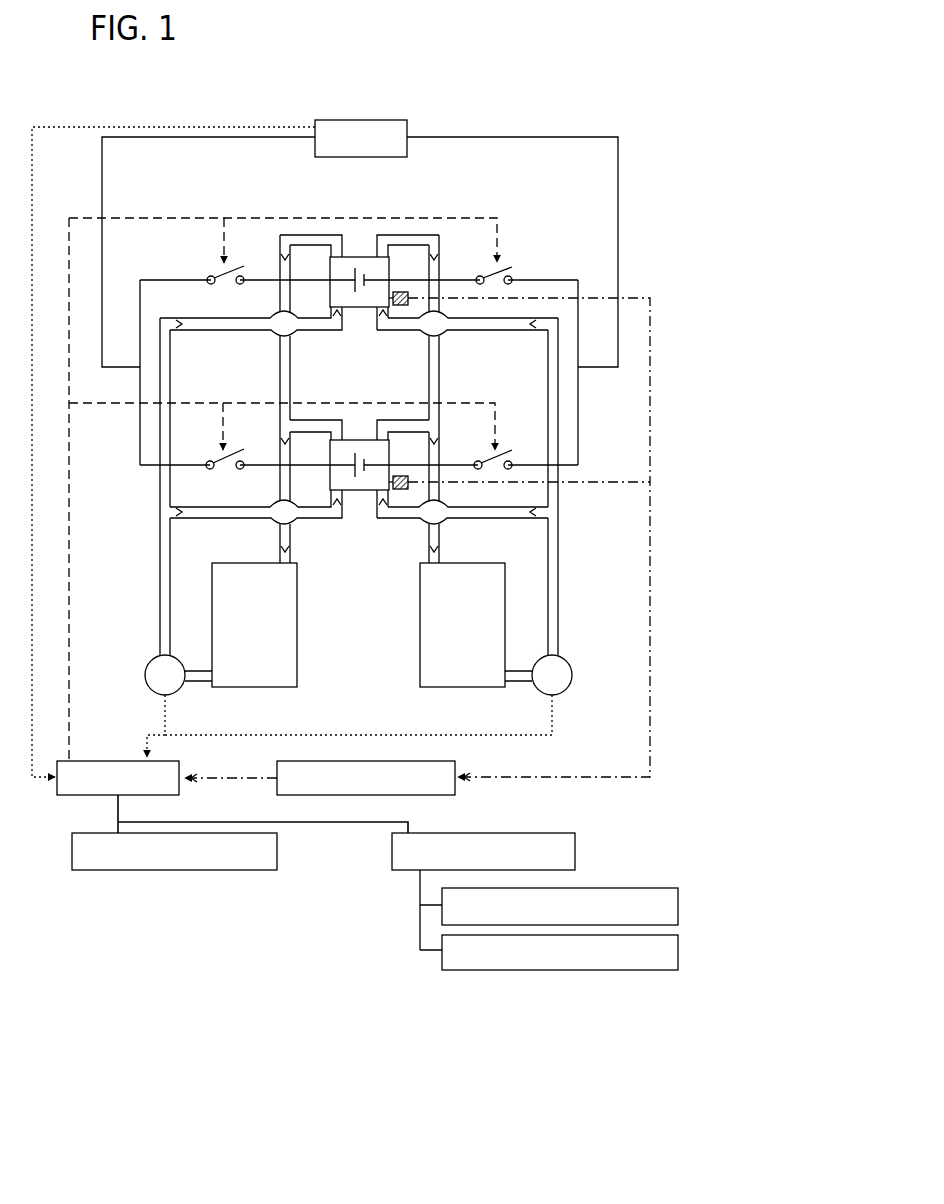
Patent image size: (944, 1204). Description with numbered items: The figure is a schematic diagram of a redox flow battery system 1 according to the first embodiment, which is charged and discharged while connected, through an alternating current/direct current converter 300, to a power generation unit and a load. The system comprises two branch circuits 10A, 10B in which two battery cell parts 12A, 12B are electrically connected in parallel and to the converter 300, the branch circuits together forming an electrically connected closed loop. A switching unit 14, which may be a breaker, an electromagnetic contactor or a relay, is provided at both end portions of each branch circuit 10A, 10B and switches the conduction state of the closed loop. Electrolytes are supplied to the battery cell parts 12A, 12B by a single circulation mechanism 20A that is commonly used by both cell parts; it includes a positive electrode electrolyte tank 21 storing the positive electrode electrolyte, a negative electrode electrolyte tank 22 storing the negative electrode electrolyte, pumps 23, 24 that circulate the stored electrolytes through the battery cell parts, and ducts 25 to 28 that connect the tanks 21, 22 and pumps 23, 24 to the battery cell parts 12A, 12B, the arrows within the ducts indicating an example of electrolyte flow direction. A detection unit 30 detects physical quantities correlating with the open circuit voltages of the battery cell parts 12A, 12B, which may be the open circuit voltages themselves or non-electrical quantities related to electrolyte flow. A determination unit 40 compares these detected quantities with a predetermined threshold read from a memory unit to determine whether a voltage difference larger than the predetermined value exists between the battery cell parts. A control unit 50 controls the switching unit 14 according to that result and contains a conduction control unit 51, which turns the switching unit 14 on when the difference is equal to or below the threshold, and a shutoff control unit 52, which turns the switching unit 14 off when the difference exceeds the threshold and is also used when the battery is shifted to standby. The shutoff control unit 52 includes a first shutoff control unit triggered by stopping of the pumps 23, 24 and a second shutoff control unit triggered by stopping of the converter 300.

The RF battery system 1 is at (642, 175).
The alternating current/direct current converter 300 is at (400, 120).
The branch circuit 10A is at (557, 281).
The branch circuit 10B is at (560, 466).
The battery cell part 12A is at (367, 257).
The battery cell part 12B is at (352, 493).
The switching unit 14 is at (216, 276).
The detection unit 30 is at (407, 310).
The circulation mechanism 20A is at (415, 646).
The positive electrode electrolyte tank 21 is at (297, 684).
The negative electrode electrolyte tank 22 is at (420, 684).
The pump 23 is at (148, 690).
The pump 24 is at (570, 692).
The duct 25 is at (160, 546).
The duct 26 is at (560, 550).
The duct 27 is at (280, 546).
The duct 28 is at (442, 540).
The determination unit 40 is at (457, 760).
The control unit 50 is at (67, 797).
The conduction control unit 51 is at (277, 850).
The shutoff control unit 52 is at (575, 850).